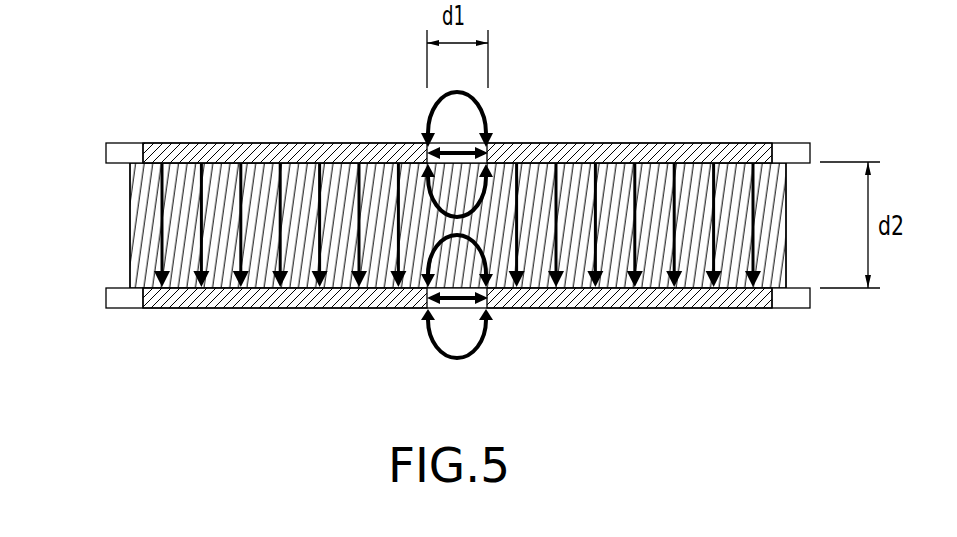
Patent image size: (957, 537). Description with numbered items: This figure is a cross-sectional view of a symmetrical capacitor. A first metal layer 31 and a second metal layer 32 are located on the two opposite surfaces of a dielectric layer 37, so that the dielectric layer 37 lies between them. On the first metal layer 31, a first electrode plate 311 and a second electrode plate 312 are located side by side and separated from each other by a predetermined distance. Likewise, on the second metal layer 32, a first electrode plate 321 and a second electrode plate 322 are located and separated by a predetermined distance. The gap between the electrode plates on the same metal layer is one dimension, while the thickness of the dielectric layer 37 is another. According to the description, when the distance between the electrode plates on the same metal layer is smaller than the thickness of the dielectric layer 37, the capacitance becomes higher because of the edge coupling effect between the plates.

The first metal layer 31 is at (106, 152).
The second metal layer 32 is at (106, 296).
The dielectric layer 37 is at (130, 232).
The first electrode plate 311 is at (284, 143).
The second electrode plate 312 is at (633, 143).
The first electrode plate 321 is at (286, 308).
The second electrode plate 322 is at (612, 308).